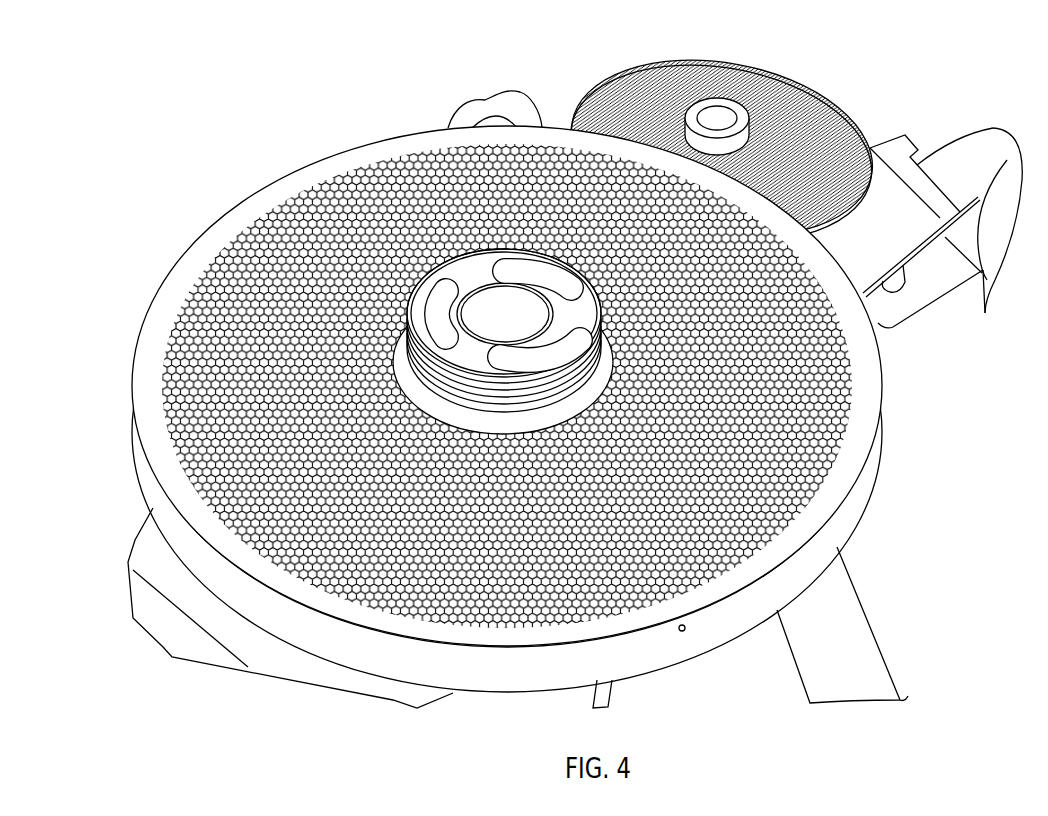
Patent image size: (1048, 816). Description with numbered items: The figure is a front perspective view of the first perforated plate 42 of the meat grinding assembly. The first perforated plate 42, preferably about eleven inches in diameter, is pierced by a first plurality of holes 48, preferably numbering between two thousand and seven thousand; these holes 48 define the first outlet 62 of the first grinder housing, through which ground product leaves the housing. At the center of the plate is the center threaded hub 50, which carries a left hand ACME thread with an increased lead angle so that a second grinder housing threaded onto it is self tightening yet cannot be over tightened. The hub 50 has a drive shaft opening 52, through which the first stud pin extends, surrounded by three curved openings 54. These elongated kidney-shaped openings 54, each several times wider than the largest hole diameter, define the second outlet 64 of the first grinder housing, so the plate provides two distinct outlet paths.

The first perforated plate 42 is at (331, 142).
The first plurality of holes 48 is at (377, 160).
The first outlet 62 is at (250, 276).
The center threaded hub 50 is at (599, 301).
The drive shaft opening 52 is at (519, 307).
The curved openings 54 is at (575, 337).
The second outlet 64 is at (416, 324).